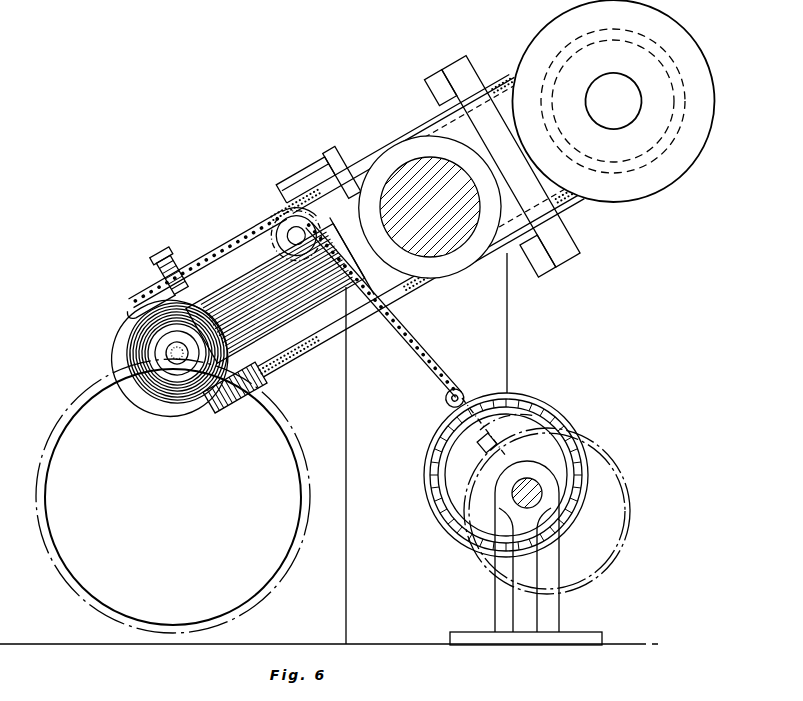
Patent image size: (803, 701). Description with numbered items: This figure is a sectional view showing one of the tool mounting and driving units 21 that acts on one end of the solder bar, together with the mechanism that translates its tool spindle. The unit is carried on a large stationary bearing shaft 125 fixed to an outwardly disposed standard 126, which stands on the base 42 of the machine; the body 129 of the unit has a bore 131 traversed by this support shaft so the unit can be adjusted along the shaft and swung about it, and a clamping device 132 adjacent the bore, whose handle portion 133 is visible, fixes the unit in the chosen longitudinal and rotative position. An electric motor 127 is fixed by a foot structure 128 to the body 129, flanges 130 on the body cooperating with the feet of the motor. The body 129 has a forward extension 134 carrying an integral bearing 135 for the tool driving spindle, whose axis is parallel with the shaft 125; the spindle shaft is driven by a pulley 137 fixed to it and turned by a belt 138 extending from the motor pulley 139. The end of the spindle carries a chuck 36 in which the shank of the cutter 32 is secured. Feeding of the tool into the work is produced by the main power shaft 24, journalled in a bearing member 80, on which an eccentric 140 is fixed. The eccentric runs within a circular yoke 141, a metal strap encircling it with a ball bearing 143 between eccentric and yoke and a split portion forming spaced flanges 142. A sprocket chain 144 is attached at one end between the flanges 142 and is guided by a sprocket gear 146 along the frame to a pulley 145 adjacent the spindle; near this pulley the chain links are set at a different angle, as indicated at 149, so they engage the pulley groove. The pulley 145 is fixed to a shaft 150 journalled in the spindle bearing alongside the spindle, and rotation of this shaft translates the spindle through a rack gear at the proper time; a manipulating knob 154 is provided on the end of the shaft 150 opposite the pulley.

The tool mounting and driving unit 21 is at (137, 327).
The main power shaft 24 is at (533, 497).
The cutter 32 is at (168, 366).
The chuck 36 is at (160, 345).
The base 42 is at (620, 648).
The bearing member 80 is at (551, 605).
The bearing shaft 125 is at (447, 175).
The standard 126 is at (346, 598).
The electric motor 127 is at (546, 38).
The foot structure 128 is at (470, 62).
The body 129 is at (440, 120).
The flange 130 is at (457, 77).
The bore 131 is at (395, 150).
The clamping device 132 is at (302, 174).
The handle portion 133 is at (282, 188).
The forward extension 134 is at (260, 290).
The bearing 135 is at (143, 386).
The pulley 137 is at (128, 393).
The belt 138 is at (577, 206).
The motor pulley 139 is at (646, 175).
The eccentric 140 is at (543, 447).
The circular yoke 141 is at (531, 393).
The flange 142 is at (458, 393).
The ball bearing 143 is at (447, 524).
The sprocket chain 144 is at (424, 352).
The pulley 145 is at (163, 270).
The sprocket gear 146 is at (297, 246).
The chain links set at a different angle 149 is at (186, 265).
The shaft 150 is at (150, 300).
The manipulating knob 154 is at (240, 405).